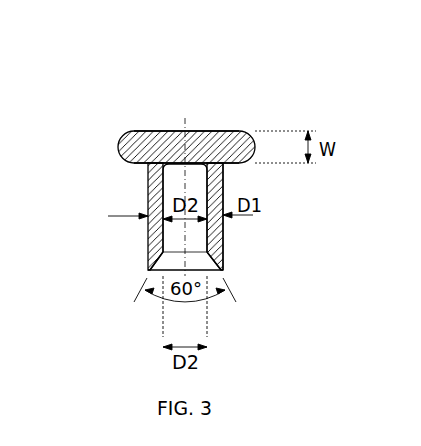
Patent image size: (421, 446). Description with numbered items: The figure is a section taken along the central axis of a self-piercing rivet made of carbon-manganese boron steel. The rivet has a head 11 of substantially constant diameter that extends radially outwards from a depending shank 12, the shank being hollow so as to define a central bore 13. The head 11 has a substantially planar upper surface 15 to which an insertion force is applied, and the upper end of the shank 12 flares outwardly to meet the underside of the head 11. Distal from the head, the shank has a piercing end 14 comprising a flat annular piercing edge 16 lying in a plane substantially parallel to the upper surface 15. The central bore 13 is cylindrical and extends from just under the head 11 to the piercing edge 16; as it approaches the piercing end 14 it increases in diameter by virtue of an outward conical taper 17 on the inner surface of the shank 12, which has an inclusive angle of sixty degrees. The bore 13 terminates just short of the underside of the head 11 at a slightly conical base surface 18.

The head 11 is at (128, 135).
The shank 12 is at (148, 235).
The central bore 13 is at (210, 238).
The piercing end 14 is at (221, 270).
The upper surface 15 is at (207, 131).
The piercing edge 16 is at (149, 270).
The outward conical taper 17 is at (222, 258).
The base surface 18 is at (148, 163).